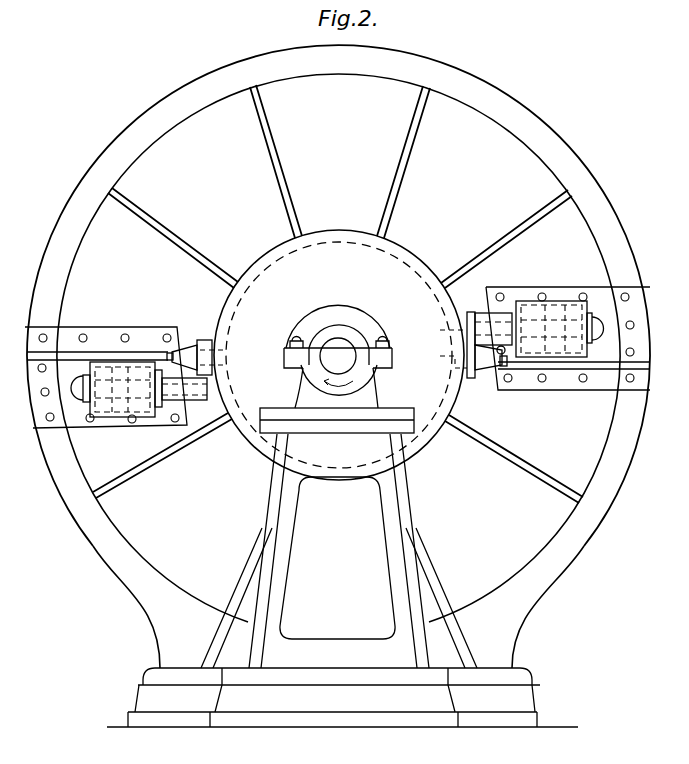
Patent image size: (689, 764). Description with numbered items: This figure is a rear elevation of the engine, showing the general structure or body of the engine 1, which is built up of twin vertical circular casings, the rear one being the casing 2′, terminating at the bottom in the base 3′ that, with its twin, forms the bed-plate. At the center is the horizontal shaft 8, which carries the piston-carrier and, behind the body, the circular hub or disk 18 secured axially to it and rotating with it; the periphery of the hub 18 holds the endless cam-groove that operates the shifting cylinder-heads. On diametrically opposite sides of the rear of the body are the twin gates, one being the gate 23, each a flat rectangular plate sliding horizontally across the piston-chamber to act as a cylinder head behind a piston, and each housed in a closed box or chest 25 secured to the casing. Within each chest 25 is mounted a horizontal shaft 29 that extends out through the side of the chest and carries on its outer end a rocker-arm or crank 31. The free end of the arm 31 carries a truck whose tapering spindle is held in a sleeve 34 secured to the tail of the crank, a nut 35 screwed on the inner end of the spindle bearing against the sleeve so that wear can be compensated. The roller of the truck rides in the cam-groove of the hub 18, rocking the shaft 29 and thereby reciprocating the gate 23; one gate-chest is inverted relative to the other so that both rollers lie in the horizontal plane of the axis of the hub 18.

The body of the engine 1 is at (318, 184).
The vertical circular casing 2′ is at (338, 294).
The base 3′ is at (342, 567).
The horizontal shaft 8 is at (338, 356).
The circular hub or disk 18 is at (339, 355).
The shifting gate 23 is at (106, 377).
The gate chest 25 is at (360, 352).
The horizontal shaft 29 is at (463, 326).
The rocker-arm or crank 31 is at (210, 359).
The sleeve 34 is at (185, 362).
The nut 35 is at (172, 353).